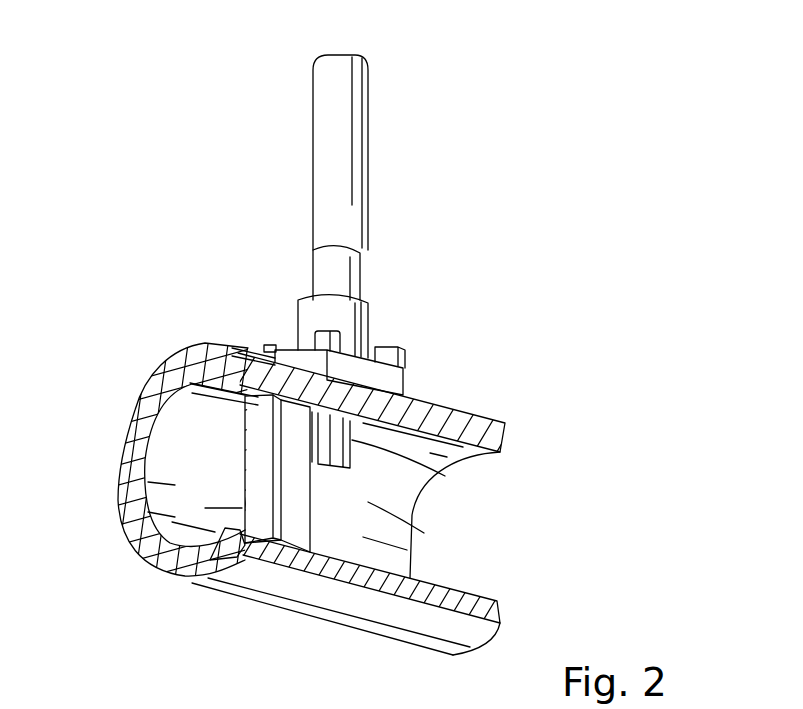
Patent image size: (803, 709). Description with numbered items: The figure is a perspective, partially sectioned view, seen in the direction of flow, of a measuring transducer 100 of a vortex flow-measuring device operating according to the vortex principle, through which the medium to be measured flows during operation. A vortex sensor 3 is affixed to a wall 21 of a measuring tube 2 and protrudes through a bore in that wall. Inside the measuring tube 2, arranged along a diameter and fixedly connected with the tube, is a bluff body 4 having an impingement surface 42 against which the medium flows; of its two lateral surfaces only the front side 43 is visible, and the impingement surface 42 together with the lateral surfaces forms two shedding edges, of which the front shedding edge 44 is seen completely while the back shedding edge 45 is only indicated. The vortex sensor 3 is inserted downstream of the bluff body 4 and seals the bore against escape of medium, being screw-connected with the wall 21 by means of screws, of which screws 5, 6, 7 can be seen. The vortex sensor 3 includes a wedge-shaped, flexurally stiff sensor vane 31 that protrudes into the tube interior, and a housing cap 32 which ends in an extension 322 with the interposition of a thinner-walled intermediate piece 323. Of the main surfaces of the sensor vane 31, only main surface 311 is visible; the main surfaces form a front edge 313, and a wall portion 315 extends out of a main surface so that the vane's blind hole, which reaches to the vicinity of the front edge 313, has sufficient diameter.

The measuring transducer 100 is at (235, 272).
The measuring tube 2 is at (130, 408).
The wall 21 is at (187, 360).
The vortex sensor 3 is at (362, 317).
The sensor vane 31 is at (443, 477).
The main surface 311 is at (350, 455).
The front edge 313 is at (424, 532).
The wall portion 315 is at (327, 468).
The housing cap 32 is at (395, 378).
The extension 322 is at (357, 158).
The intermediate piece 323 is at (352, 275).
The bluff body 4 is at (238, 471).
The impingement surface 42 is at (260, 432).
The front lateral surface 43 is at (298, 525).
The front shedding edge 44 is at (232, 498).
The back shedding edge 45 is at (238, 457).
The screw 5 is at (403, 348).
The screw 6 is at (332, 330).
The screw 7 is at (273, 350).